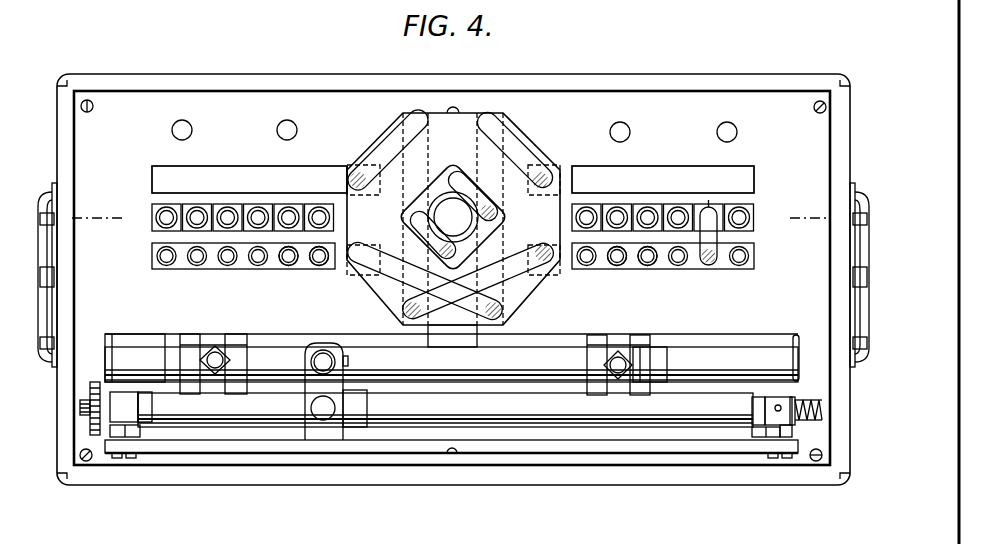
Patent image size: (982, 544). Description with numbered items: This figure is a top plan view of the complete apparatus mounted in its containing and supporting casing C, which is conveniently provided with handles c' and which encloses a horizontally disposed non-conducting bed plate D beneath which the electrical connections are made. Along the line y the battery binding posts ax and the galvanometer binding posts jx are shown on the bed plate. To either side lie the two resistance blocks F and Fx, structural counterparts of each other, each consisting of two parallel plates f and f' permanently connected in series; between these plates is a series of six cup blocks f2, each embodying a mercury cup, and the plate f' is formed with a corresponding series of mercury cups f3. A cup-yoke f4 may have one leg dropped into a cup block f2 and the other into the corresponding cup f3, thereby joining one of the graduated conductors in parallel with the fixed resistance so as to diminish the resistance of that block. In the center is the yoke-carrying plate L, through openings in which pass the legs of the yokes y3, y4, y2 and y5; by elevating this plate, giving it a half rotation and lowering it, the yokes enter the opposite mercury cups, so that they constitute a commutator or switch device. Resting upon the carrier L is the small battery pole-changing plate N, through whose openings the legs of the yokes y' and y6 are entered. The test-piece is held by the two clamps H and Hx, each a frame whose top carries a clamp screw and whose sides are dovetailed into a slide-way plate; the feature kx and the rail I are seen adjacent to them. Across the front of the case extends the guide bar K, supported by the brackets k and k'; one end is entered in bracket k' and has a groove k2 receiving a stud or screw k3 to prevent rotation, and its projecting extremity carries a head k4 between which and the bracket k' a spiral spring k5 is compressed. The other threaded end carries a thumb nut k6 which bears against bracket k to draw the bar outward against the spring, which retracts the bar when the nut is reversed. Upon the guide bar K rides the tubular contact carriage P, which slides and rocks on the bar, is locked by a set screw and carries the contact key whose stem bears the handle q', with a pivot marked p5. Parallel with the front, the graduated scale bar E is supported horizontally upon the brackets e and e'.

The containing and supporting casing C is at (641, 86).
The non-conducting bed plate D is at (452, 278).
The handles c' is at (451, 292).
The section line y is at (450, 218).
The plate f is at (446, 182).
The resistance block Fx is at (249, 164).
The resistance block F is at (663, 168).
The cup blocks f2 is at (766, 218).
The plate f' is at (447, 257).
The mercury cups f3 is at (646, 268).
The cup-yoke f4 is at (708, 270).
The binding posts ax is at (290, 118).
The binding posts jx is at (624, 128).
The yoke-carrying plate L is at (453, 227).
The battery pole-changing plate N is at (467, 217).
The yoke y3 is at (393, 152).
The yoke y4 is at (514, 153).
The yoke y2 is at (388, 279).
The yoke y5 is at (512, 279).
The yoke y' is at (475, 193).
The yoke y6 is at (420, 230).
The carriage rail I is at (452, 358).
The clamp Hx is at (211, 340).
The clamp H is at (614, 342).
The bracket nut kx is at (650, 330).
The guide bar K is at (445, 408).
The bracket k is at (124, 407).
The thumb nut k6 is at (96, 384).
The bracket e is at (139, 433).
The contact carriage P is at (322, 432).
The handle q' is at (329, 340).
The post pivot p5 is at (323, 408).
The scale bar E is at (562, 440).
The groove k2 is at (756, 404).
The bracket k' is at (772, 400).
The stud or screw k3 is at (792, 390).
The head k4 is at (814, 400).
The spiral spring k5 is at (792, 430).
The bracket e' is at (756, 435).